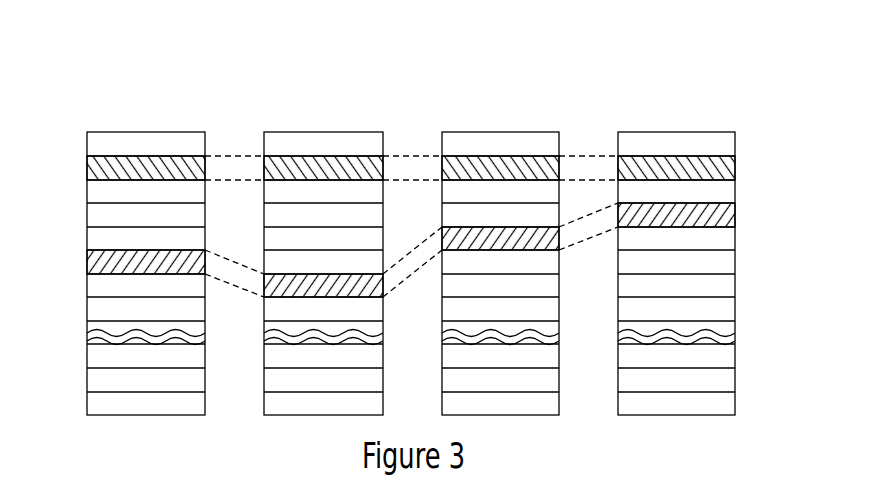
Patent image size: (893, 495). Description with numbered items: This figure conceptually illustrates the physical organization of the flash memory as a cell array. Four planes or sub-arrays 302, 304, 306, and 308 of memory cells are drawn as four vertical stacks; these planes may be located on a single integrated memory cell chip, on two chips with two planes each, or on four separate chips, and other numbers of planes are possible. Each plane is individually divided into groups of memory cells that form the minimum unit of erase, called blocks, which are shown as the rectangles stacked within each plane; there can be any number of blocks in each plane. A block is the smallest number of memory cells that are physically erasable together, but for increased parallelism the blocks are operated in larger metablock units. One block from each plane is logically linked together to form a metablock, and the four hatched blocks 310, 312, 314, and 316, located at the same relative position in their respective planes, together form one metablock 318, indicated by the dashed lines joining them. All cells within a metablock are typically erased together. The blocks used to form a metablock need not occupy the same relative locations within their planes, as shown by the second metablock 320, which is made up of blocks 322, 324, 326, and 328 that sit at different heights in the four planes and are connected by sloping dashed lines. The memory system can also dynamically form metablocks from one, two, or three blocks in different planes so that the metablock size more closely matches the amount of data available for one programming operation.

The plane 302 is at (125, 240).
The plane 304 is at (306, 240).
The plane 306 is at (478, 240).
The plane 308 is at (704, 240).
The block 310 is at (128, 168).
The block 312 is at (301, 168).
The block 314 is at (480, 168).
The block 316 is at (703, 167).
The metablock 318 is at (592, 168).
The second metablock 320 is at (590, 221).
The block 322 is at (125, 263).
The block 324 is at (300, 285).
The block 326 is at (488, 238).
The block 328 is at (703, 213).